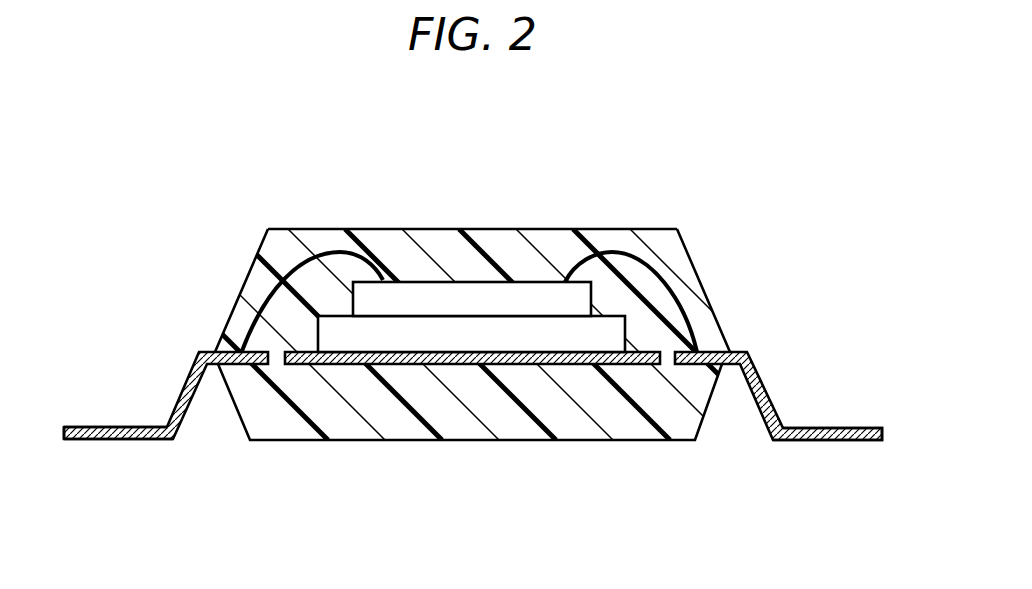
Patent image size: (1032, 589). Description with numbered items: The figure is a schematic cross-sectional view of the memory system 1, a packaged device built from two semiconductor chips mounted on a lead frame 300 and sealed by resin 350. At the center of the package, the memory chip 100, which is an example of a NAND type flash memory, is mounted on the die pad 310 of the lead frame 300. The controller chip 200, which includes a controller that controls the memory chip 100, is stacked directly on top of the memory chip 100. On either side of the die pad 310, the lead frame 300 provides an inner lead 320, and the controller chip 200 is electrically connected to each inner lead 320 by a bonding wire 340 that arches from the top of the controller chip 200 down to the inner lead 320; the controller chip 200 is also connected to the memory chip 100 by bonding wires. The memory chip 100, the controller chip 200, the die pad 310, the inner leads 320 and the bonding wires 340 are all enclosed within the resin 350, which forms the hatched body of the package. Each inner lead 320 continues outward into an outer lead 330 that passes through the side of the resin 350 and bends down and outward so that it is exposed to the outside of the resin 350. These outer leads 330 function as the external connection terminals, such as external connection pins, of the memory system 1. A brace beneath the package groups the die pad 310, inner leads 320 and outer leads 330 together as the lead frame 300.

The memory system 1 is at (762, 148).
The memory chip 100 is at (415, 332).
The controller chip 200 is at (478, 298).
The lead frame 300 is at (473, 455).
The die pad 310 is at (477, 365).
The inner lead 320 is at (250, 365).
The outer lead 330 is at (852, 498).
The bonding wire 340 is at (660, 290).
The resin 350 is at (550, 252).